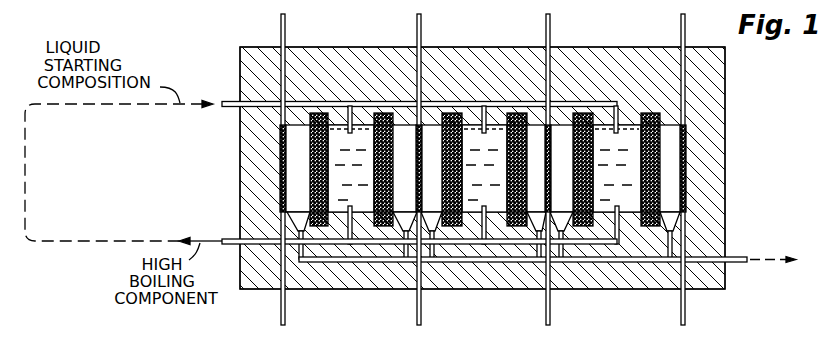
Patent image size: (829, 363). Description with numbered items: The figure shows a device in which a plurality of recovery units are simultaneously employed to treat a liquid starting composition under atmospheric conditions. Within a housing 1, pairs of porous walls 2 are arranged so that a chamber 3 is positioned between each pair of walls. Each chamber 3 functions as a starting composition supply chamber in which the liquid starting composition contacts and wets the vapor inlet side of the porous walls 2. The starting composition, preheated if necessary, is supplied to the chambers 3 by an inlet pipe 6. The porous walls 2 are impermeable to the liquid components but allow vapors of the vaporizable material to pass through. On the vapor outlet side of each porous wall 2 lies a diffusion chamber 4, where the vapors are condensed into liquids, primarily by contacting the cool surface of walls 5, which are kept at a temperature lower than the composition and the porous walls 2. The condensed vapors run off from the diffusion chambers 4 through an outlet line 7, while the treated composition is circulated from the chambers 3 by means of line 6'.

The housing 1 is at (258, 50).
The porous walls 2 is at (322, 113).
The chamber 3 is at (339, 206).
The diffusion chamber 4 is at (672, 135).
The walls 5 is at (286, 27).
The inlet pipe 6 is at (420, 77).
The line 6' is at (428, 282).
The outlet line 7 is at (649, 264).